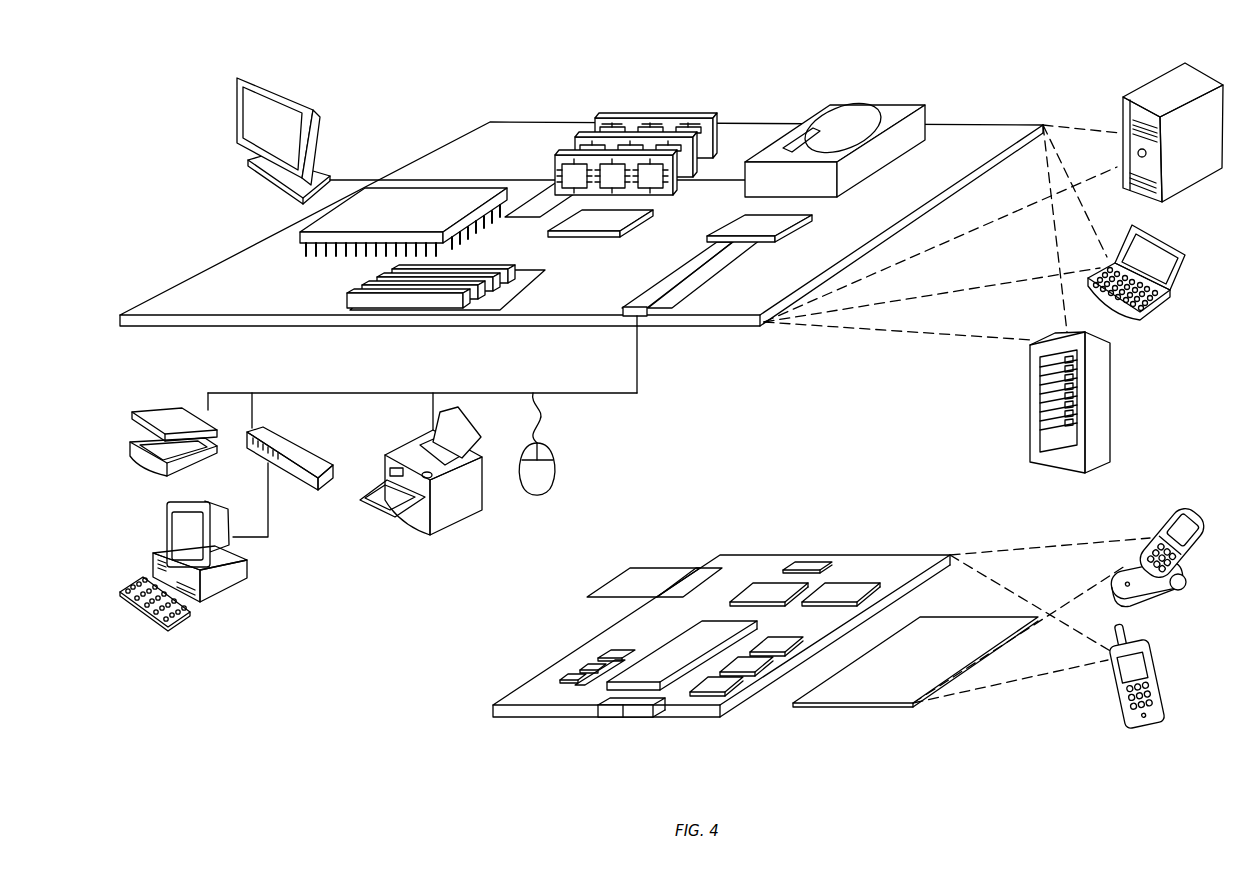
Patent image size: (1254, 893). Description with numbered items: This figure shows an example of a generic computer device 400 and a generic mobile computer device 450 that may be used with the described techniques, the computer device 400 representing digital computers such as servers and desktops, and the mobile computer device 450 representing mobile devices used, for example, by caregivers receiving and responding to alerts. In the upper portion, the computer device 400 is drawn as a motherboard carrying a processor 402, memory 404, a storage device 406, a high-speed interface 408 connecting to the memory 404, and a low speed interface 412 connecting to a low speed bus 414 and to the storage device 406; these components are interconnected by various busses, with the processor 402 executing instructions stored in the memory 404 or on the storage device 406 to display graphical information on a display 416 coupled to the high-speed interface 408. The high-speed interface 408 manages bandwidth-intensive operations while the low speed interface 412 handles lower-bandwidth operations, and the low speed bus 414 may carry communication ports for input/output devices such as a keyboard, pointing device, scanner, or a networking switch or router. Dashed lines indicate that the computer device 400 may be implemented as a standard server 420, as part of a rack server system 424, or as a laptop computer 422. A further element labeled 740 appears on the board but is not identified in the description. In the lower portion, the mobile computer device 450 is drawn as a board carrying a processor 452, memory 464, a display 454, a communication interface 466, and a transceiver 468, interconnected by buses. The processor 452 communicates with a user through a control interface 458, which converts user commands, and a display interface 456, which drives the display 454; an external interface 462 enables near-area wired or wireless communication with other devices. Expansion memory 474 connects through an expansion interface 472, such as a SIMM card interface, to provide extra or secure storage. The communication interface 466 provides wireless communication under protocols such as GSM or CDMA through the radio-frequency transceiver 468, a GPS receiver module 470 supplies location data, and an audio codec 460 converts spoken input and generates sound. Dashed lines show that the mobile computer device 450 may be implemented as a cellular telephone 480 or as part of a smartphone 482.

The computer device 400 is at (416, 94).
The processor 402 is at (300, 234).
The memory 404 is at (610, 118).
The storage device 406 is at (835, 106).
The high-speed interface 408 is at (582, 220).
The low speed interface 412 is at (737, 224).
The low speed bus 414 is at (647, 315).
The display 416 is at (240, 75).
The standard server 420 is at (1123, 114).
The laptop computer 422 is at (1184, 254).
The rack server system 424 is at (1034, 436).
The mobile computer device 450 is at (468, 720).
The processor 452 is at (657, 680).
The display 454 is at (877, 692).
The display interface 456 is at (718, 688).
The control interface 458 is at (748, 667).
The audio codec 460 is at (776, 645).
The external interface 462 is at (625, 712).
The memory 464 is at (572, 670).
The communication interface 466 is at (770, 590).
The transceiver 468 is at (840, 590).
The GPS receiver module 470 is at (815, 563).
The expansion interface 472 is at (700, 567).
The expansion memory 474 is at (634, 567).
The cellular telephone 480 is at (1170, 522).
The smartphone 482 is at (1114, 690).
The memory chips 740 is at (363, 288).